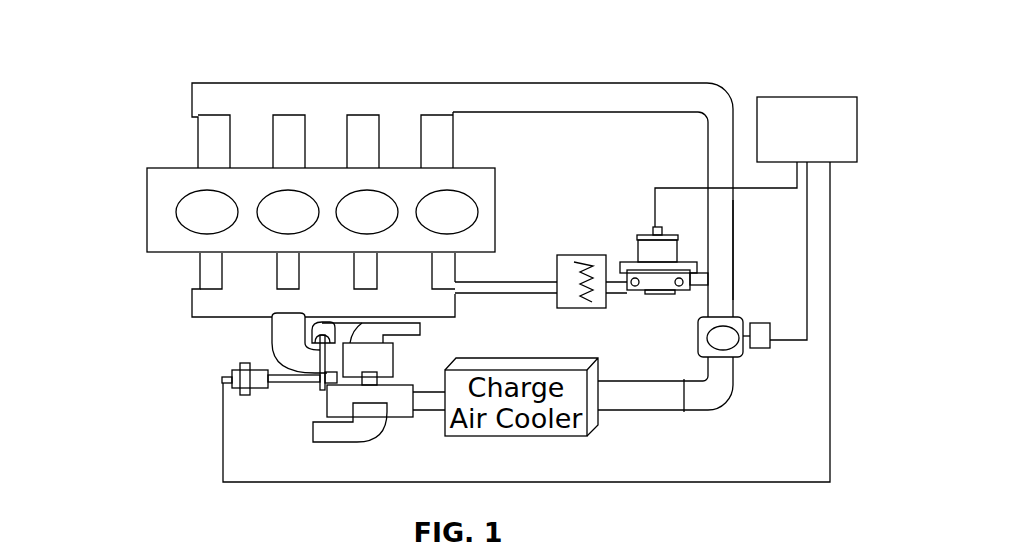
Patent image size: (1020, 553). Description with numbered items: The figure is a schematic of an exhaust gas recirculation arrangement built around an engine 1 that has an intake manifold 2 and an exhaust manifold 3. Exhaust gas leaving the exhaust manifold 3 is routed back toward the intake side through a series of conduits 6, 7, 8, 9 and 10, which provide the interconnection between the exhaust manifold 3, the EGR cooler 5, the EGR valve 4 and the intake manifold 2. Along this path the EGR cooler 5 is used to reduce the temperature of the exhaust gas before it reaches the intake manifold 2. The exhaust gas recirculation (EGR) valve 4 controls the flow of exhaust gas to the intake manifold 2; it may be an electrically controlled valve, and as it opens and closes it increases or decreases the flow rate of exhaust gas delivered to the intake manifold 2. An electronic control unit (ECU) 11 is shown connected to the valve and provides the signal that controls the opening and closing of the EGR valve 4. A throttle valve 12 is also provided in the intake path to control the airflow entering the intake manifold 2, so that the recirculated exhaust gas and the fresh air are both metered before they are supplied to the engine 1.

The engine 1 is at (118, 213).
The intake manifold 2 is at (190, 100).
The exhaust manifold 3 is at (190, 305).
The exhaust gas recirculation (EGR) valve 4 is at (643, 233).
The EGR cooler 5 is at (580, 255).
The conduit 6 is at (500, 300).
The conduit 7 is at (615, 298).
The conduit 8 is at (697, 290).
The conduit 9 is at (740, 243).
The conduit 10 is at (645, 80).
The electronic control unit (ECU) 11 is at (813, 94).
The throttle valve 12 is at (747, 362).